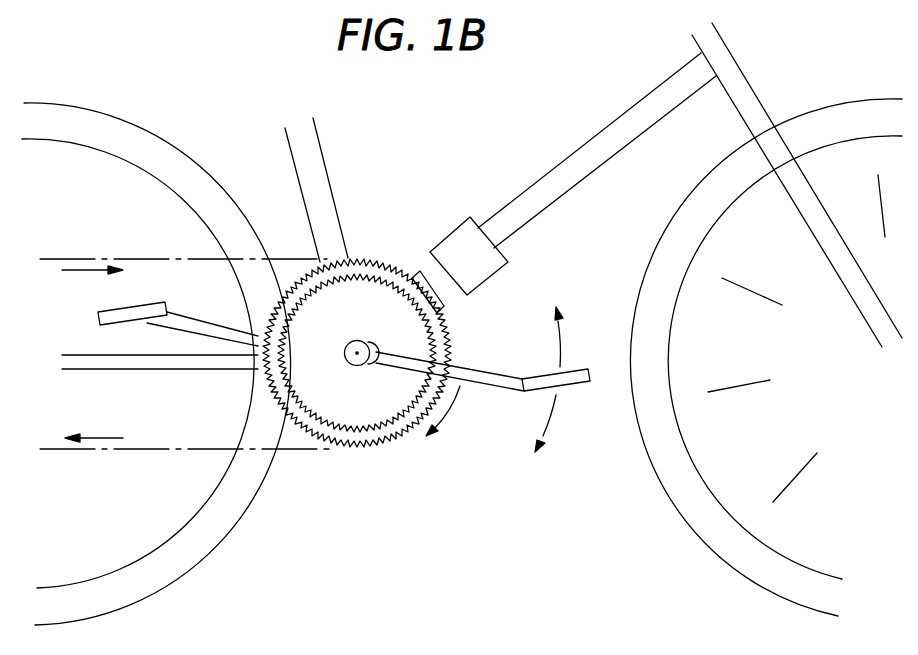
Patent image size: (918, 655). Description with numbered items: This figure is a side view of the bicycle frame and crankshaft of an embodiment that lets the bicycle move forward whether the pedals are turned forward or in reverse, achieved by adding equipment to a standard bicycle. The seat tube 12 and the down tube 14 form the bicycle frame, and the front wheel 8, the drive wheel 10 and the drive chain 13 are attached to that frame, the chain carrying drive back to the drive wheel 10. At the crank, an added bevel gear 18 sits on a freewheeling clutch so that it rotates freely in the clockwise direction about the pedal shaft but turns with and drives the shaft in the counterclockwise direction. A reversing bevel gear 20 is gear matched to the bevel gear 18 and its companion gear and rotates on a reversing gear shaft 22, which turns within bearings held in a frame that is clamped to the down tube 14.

The front wheel 8 is at (838, 100).
The drive wheel 10 is at (162, 137).
The seat tube 12 is at (325, 162).
The drive chain 13 is at (93, 258).
The down tube 14 is at (632, 141).
The bevel gear 18 is at (335, 400).
The reversing bevel gear 20 is at (413, 275).
The reversing gear shaft 22 is at (447, 297).